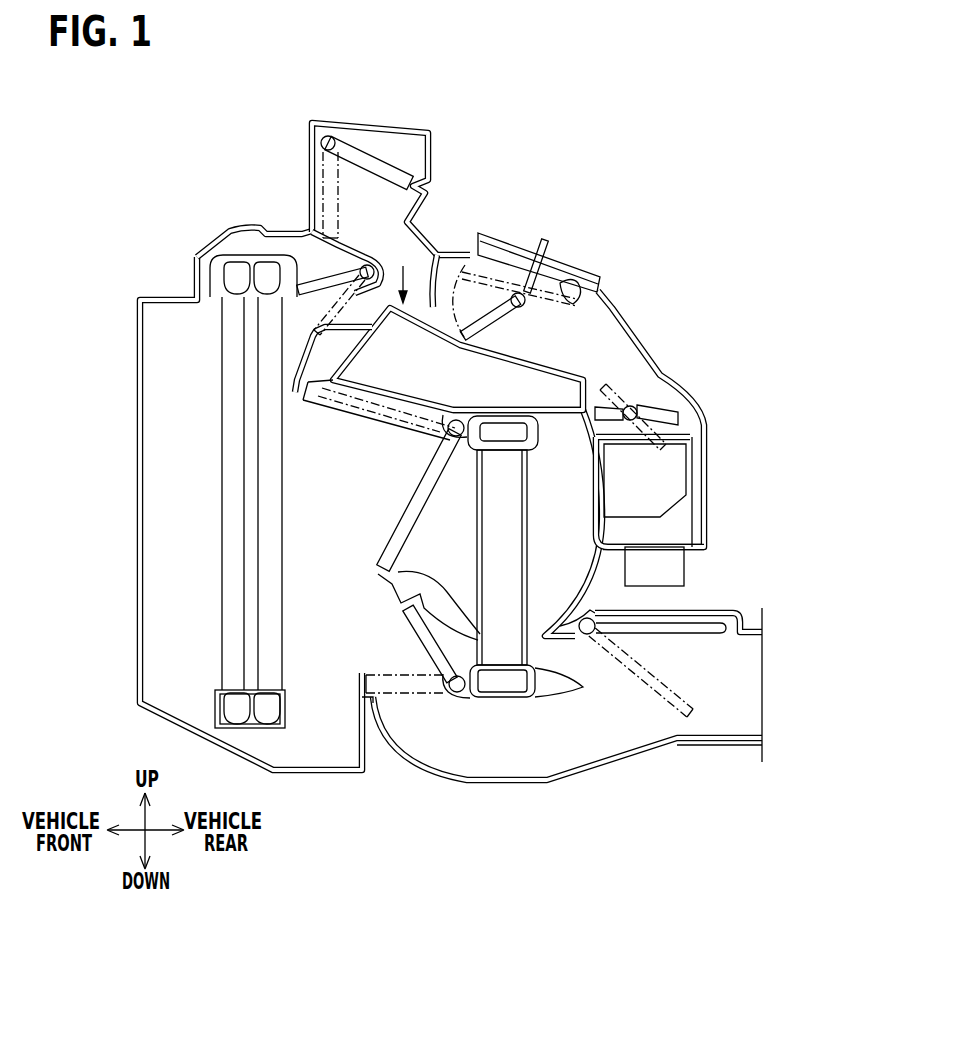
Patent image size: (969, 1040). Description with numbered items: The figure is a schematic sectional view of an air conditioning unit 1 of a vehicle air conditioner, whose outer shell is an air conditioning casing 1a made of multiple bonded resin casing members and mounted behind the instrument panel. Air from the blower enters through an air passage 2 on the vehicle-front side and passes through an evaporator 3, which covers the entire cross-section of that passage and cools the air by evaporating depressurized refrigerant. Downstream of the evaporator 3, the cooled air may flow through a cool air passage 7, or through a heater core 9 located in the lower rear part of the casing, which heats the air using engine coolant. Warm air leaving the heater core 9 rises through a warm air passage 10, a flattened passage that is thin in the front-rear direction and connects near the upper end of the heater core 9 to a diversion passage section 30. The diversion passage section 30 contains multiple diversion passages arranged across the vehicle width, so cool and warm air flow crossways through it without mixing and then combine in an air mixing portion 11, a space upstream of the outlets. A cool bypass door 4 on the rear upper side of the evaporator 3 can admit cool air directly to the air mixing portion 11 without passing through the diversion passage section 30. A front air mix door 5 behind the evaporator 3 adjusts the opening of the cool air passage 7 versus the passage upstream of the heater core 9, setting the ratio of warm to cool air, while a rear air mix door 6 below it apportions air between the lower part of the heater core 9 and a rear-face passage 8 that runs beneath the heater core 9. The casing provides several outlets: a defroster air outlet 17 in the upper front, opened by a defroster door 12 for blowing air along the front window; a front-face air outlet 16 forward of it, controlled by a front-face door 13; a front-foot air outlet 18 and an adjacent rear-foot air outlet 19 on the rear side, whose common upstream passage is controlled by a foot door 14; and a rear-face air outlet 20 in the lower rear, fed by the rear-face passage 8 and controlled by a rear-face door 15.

The air conditioning unit 1 is at (692, 254).
The air conditioning casing 1a is at (280, 228).
The air passage 2 is at (170, 490).
The evaporator 3 is at (217, 587).
The cool bypass door 4 is at (320, 287).
The front air mix door 5 is at (410, 493).
The rear air mix door 6 is at (408, 626).
The cool air passage 7 is at (347, 417).
The rear-face passage 8 is at (417, 703).
The heater core 9 is at (500, 620).
The warm air passage 10 is at (555, 567).
The air mixing portion 11 is at (432, 302).
The defroster door 12 is at (372, 163).
The front-face door 13 is at (557, 287).
The foot door 14 is at (662, 410).
The rear-face door 15 is at (719, 634).
The front-face air outlet 16 is at (533, 268).
The defroster air outlet 17 is at (402, 176).
The front-foot air outlet 18 is at (690, 465).
The rear-foot air outlet 19 is at (670, 587).
The rear-face air outlet 20 is at (714, 727).
The diversion passage section 30 is at (557, 371).